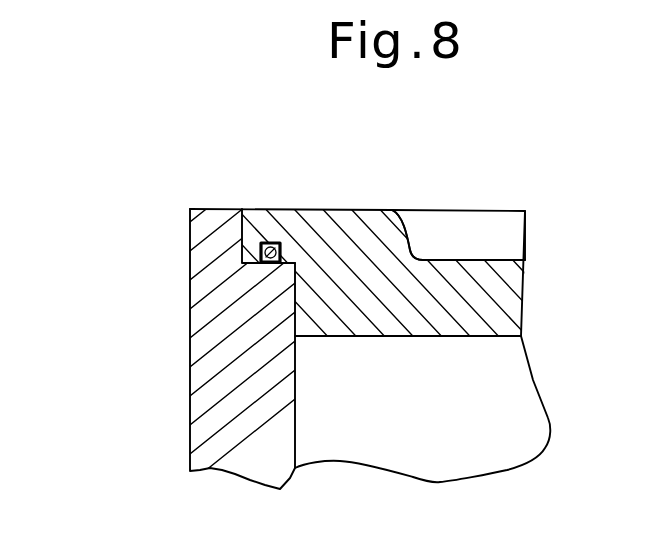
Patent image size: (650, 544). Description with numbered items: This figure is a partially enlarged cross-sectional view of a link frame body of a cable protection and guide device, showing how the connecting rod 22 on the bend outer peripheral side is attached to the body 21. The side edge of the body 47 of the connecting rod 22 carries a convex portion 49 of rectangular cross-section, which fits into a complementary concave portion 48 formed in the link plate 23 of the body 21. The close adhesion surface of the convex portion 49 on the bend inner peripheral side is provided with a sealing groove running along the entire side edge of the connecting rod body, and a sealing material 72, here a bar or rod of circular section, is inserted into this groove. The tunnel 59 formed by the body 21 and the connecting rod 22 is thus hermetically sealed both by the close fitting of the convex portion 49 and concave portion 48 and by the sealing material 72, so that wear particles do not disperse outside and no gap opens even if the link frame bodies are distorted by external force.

The body 21 is at (190, 411).
The connecting rod 22 is at (433, 210).
The link plate 23 is at (192, 351).
The body of the connecting rod 47 is at (469, 280).
The concave portion 48 is at (264, 243).
The convex portion 49 is at (243, 263).
The tunnel 59 is at (430, 420).
The sealing material 72 is at (271, 244).